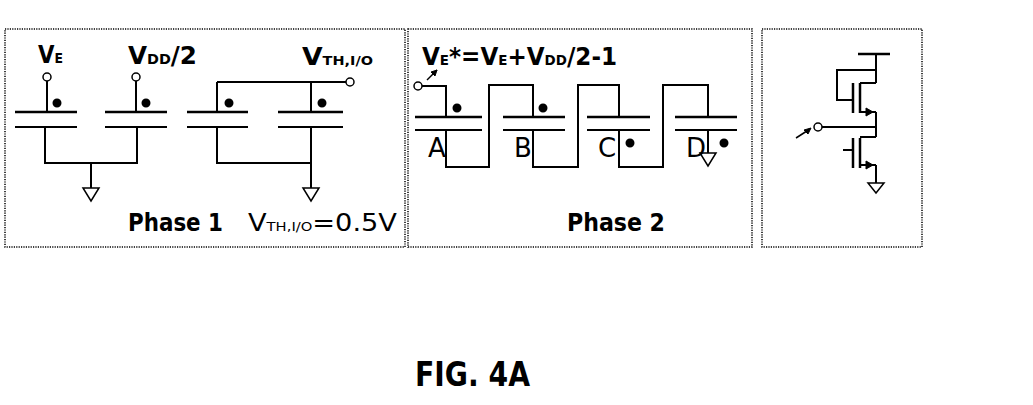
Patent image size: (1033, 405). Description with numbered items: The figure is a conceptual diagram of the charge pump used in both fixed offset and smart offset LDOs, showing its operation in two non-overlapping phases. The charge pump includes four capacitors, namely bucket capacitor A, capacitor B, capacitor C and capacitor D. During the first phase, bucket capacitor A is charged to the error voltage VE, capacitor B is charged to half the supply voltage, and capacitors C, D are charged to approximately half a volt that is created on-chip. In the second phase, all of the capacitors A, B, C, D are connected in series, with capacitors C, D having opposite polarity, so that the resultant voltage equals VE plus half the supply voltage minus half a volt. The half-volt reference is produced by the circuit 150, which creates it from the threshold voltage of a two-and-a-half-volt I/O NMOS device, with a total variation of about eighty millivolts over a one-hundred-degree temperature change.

The 0.5V maker circuit 150 is at (798, 245).
The bucket capacitor A is at (46, 115).
The capacitor B is at (136, 115).
The capacitor C is at (217, 120).
The capacitor D is at (310, 120).